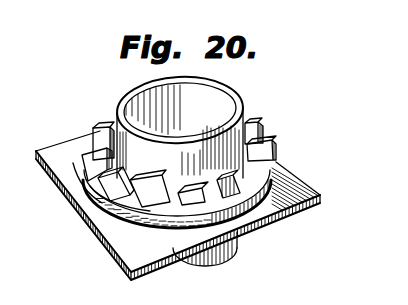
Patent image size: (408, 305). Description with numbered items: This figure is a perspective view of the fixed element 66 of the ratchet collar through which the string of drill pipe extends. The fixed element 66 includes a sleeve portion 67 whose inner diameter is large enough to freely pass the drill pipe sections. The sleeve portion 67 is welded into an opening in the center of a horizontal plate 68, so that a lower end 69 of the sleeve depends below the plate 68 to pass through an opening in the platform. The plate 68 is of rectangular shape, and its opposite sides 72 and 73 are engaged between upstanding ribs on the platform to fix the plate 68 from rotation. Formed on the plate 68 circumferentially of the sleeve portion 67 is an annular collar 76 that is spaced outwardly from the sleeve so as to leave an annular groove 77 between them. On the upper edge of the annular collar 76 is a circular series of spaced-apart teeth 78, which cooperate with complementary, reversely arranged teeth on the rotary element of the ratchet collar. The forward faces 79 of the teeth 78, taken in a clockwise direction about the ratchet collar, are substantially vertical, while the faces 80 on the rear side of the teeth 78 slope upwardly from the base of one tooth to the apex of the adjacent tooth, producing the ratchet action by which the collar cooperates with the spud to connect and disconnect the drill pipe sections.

The fixed element 66 is at (86, 132).
The sleeve portion 67 is at (237, 100).
The horizontal plate 68 is at (305, 192).
The lower end 69 is at (212, 265).
The side 72 is at (187, 205).
The side 73 is at (280, 170).
The annular collar 76 is at (95, 199).
The annular groove 77 is at (83, 161).
The teeth 78 is at (148, 207).
The forward faces 79 is at (160, 197).
The rear faces 80 is at (208, 190).